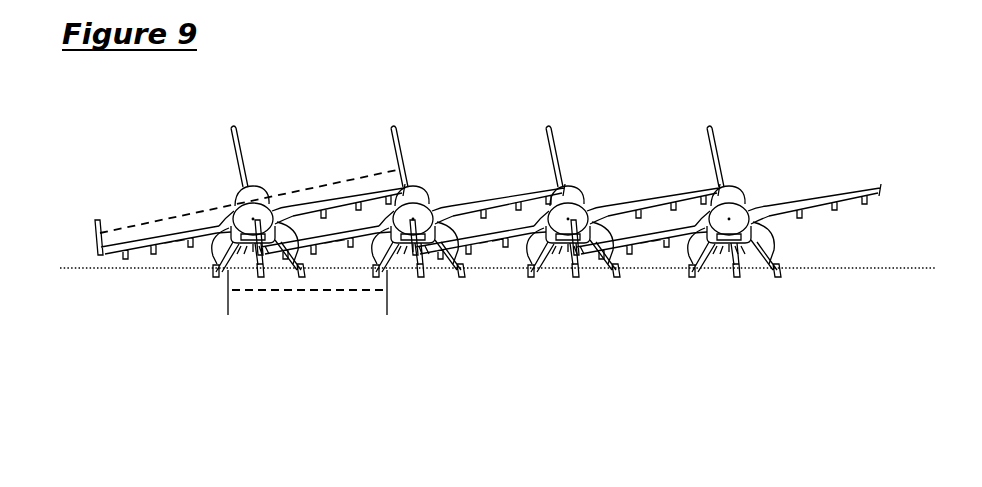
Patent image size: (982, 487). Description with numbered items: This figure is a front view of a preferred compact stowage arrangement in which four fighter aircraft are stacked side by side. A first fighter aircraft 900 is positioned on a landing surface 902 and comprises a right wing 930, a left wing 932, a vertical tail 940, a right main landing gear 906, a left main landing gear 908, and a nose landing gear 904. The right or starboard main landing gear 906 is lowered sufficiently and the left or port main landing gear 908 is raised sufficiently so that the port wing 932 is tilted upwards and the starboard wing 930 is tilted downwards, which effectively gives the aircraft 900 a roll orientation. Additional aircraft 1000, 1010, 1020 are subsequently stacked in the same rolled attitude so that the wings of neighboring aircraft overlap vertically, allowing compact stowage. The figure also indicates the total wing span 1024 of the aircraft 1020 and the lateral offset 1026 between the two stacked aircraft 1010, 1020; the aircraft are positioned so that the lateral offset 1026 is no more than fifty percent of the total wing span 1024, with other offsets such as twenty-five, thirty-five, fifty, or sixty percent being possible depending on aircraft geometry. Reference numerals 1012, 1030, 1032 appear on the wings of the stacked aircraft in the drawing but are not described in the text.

The first fighter aircraft 900 is at (726, 225).
The landing surface 902 is at (80, 268).
The nose landing gear 904 is at (732, 306).
The right main landing gear 906 is at (682, 290).
The left main landing gear 908 is at (790, 289).
The right wing 930 is at (633, 279).
The left wing 932 is at (824, 174).
The vertical tail 940 is at (677, 138).
The additional aircraft 1000 is at (565, 199).
The additional aircraft 1010 is at (410, 179).
The wing 1012 is at (508, 167).
The additional aircraft 1020 is at (205, 187).
The total wing span 1024 is at (162, 223).
The lateral offset 1026 is at (310, 291).
The wing 1030 is at (472, 279).
The wing 1032 is at (659, 178).